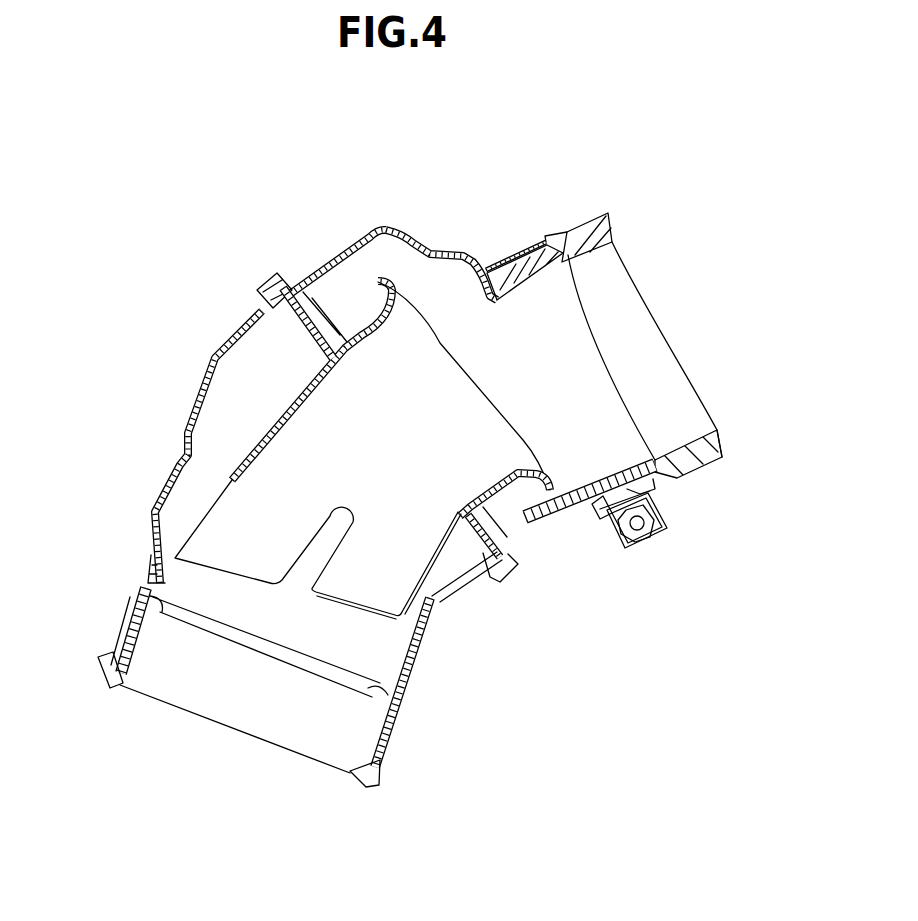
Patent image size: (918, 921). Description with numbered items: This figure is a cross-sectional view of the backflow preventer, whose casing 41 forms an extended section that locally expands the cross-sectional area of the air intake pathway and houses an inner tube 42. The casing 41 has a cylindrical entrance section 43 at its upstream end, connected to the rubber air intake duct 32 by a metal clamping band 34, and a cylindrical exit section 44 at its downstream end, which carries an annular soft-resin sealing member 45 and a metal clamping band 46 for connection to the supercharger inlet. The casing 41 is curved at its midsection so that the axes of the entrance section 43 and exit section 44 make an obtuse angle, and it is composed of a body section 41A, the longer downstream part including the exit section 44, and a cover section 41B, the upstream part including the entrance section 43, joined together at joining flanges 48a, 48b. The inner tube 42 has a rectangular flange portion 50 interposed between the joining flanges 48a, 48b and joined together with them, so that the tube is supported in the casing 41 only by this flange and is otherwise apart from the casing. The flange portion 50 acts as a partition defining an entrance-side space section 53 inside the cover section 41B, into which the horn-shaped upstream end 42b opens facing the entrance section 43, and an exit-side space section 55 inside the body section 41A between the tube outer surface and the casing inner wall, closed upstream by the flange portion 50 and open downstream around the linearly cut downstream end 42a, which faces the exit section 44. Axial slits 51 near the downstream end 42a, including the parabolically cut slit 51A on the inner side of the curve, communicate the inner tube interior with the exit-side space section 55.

The air intake duct 32 is at (611, 230).
The metal clamping band 34 is at (526, 258).
The casing 41 is at (556, 518).
The body section 41A is at (217, 357).
The cover section 41B is at (371, 235).
The inner tube 42 is at (283, 457).
The downstream end 42a is at (231, 582).
The upstream end 42b is at (493, 403).
The entrance section 43 is at (580, 331).
The exit section 44 is at (220, 713).
The sealing member 45 is at (102, 665).
The metal clamping band 46 is at (381, 732).
The joining flange 48a is at (261, 287).
The joining flange 48b is at (276, 282).
The flange portion 50 is at (306, 290).
The slit 51 is at (208, 512).
The slit 51A is at (455, 587).
The entrance-side space section 53 is at (390, 258).
The exit-side space section 55 is at (276, 341).